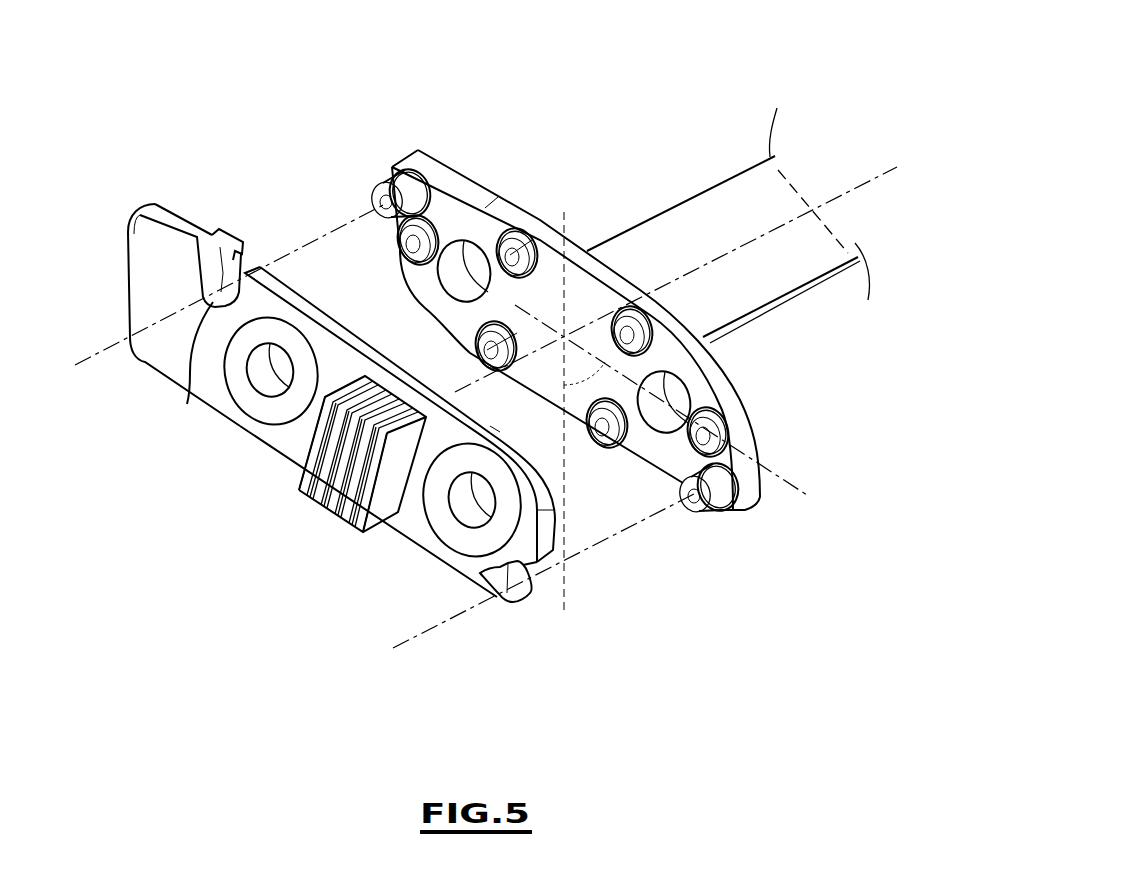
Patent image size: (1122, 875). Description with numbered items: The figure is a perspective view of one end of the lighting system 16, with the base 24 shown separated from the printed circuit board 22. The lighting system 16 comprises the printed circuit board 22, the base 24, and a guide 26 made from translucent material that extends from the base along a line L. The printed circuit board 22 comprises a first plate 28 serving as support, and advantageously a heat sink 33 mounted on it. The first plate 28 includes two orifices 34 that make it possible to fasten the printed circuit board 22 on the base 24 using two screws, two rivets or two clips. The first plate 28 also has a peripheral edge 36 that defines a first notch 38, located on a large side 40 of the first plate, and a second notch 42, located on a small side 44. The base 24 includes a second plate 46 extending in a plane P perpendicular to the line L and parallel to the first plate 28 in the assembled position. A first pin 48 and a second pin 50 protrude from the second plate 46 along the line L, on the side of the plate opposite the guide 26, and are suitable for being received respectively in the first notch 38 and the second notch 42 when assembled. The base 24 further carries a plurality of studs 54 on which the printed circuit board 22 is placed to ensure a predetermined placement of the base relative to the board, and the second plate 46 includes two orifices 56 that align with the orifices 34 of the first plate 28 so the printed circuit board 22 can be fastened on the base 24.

The lighting system 16 is at (831, 104).
The printed circuit board 22 is at (147, 238).
The base 24 is at (482, 190).
The guide 26 is at (740, 207).
The first plate 28 is at (150, 363).
The heat sink 33 is at (301, 486).
The orifices 34 is at (266, 386).
The peripheral edge 36 is at (127, 297).
The first notch 38 is at (188, 397).
The large side 40 is at (283, 290).
The second notch 42 is at (513, 572).
The small side 44 is at (552, 537).
The second plate 46 is at (433, 163).
The first pin 48 is at (390, 177).
The second pin 50 is at (687, 497).
The studs 54 is at (407, 243).
The orifices 56 is at (457, 280).
The line L is at (872, 184).
The plane P is at (584, 413).